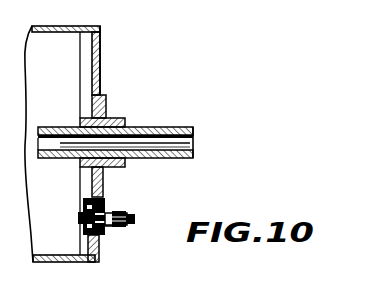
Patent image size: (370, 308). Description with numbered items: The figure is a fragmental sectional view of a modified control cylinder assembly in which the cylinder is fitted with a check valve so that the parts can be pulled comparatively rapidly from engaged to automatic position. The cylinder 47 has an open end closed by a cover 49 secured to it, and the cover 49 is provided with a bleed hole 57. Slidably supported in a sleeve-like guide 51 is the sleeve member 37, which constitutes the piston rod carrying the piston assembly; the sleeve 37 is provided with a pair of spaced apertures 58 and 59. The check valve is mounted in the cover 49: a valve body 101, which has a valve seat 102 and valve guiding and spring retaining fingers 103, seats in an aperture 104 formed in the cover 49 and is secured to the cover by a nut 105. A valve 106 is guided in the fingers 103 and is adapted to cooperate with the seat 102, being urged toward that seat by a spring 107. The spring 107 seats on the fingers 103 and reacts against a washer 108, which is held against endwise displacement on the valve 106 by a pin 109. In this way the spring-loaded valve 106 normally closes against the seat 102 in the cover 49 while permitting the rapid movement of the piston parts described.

The cylinder 47 is at (48, 43).
The bleed hole 57 is at (100, 45).
The cover 49 is at (100, 68).
The sleeve-like guide 51 is at (106, 115).
The aperture 58 is at (57, 130).
The aperture 59 is at (163, 129).
The sleeve member 37 is at (186, 147).
The nut 105 is at (103, 200).
The valve body 101 is at (106, 214).
The valve 106 is at (128, 212).
The washer 108 is at (130, 215).
The pin 109 is at (136, 219).
The spring 107 is at (122, 226).
The valve guiding and spring retaining fingers 103 is at (104, 230).
The valve seat 102 is at (86, 222).
The aperture 104 is at (82, 261).